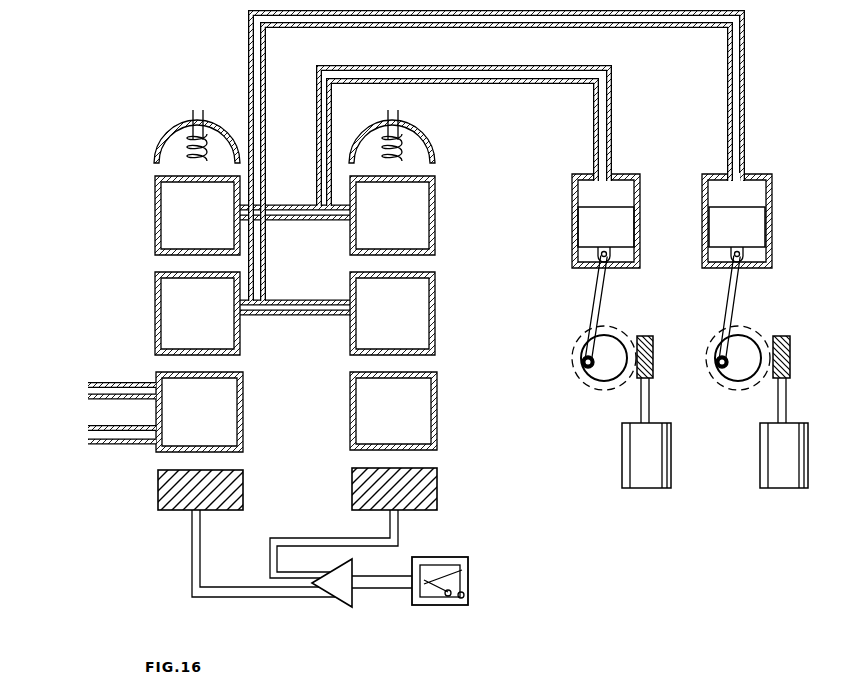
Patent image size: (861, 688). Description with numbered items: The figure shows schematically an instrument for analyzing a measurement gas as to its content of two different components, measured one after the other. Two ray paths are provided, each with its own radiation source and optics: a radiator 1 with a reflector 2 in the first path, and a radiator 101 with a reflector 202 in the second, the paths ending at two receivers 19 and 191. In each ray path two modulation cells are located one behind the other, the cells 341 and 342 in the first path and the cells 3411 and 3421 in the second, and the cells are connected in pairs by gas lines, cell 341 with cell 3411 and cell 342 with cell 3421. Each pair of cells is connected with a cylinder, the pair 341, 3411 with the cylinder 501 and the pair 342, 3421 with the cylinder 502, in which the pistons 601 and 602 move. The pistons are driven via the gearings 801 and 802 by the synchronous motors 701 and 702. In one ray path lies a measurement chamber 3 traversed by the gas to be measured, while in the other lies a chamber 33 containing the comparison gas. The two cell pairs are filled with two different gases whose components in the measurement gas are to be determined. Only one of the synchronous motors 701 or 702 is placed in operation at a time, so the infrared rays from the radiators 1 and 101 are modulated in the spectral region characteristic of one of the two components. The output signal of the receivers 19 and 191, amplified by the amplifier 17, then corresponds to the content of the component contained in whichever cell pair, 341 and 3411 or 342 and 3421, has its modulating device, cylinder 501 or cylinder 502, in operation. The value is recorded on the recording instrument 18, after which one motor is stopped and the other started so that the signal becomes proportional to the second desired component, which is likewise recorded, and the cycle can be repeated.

The radiator 1 is at (207, 138).
The reflector 2 is at (165, 134).
The measurement chamber 3 is at (226, 403).
The amplifier 17 is at (334, 592).
The recording instrument 18 is at (449, 600).
The receiver 19 is at (233, 490).
The chamber 33 is at (417, 402).
The radiator 101 is at (403, 138).
The receiver 191 is at (433, 487).
The reflector 202 is at (361, 136).
The modulation cell 341 is at (166, 205).
The modulation cell 342 is at (166, 315).
The cylinder 501 is at (615, 188).
The cylinder 502 is at (749, 188).
The piston 601 is at (627, 228).
The piston 602 is at (760, 228).
The synchronous motor 701 is at (648, 480).
The synchronous motor 702 is at (780, 480).
The gearing 801 is at (635, 338).
The gearing 802 is at (770, 338).
The modulation cell 3411 is at (415, 207).
The modulation cell 3421 is at (415, 313).